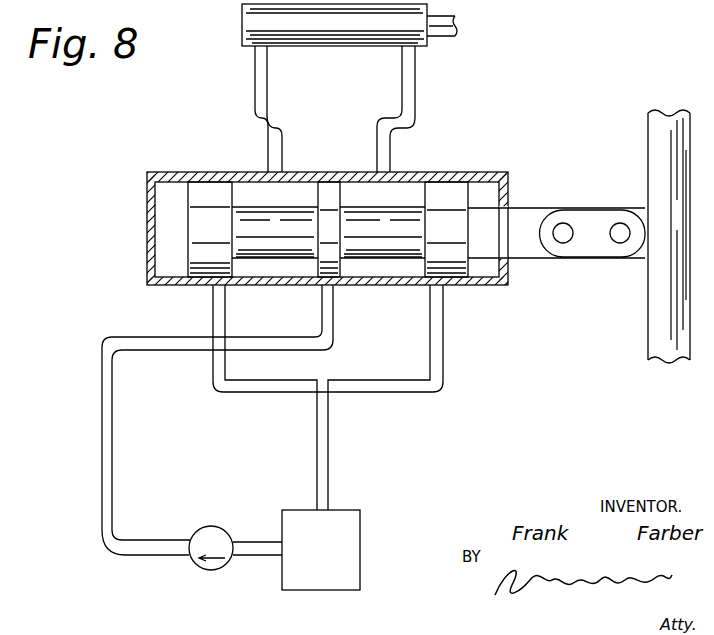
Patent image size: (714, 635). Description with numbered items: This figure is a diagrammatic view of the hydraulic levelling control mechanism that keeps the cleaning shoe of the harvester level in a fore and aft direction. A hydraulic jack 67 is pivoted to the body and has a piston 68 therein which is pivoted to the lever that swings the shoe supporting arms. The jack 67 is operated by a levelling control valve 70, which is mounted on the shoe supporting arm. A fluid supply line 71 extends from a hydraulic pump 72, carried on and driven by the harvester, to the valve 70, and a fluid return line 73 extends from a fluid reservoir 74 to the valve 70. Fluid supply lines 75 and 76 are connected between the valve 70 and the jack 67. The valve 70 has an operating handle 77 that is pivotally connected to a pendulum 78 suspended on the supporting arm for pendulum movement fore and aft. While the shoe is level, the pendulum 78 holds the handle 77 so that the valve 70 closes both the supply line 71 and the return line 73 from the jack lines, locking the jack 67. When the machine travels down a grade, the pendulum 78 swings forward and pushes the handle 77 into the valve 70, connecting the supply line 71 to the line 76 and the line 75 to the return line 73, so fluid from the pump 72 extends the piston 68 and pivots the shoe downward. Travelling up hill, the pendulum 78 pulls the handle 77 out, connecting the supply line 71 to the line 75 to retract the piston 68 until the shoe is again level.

The hydraulic jack 67 is at (372, 32).
The piston 68 is at (440, 25).
The levelling control valve 70 is at (150, 218).
The fluid supply line 71 is at (333, 326).
The hydraulic pump 72 is at (218, 530).
The fluid return line 73 is at (443, 344).
The fluid reservoir 74 is at (356, 531).
The fluid supply line 75 is at (258, 110).
The fluid supply line 76 is at (380, 126).
The operating handle 77 is at (604, 250).
The pendulum 78 is at (660, 172).